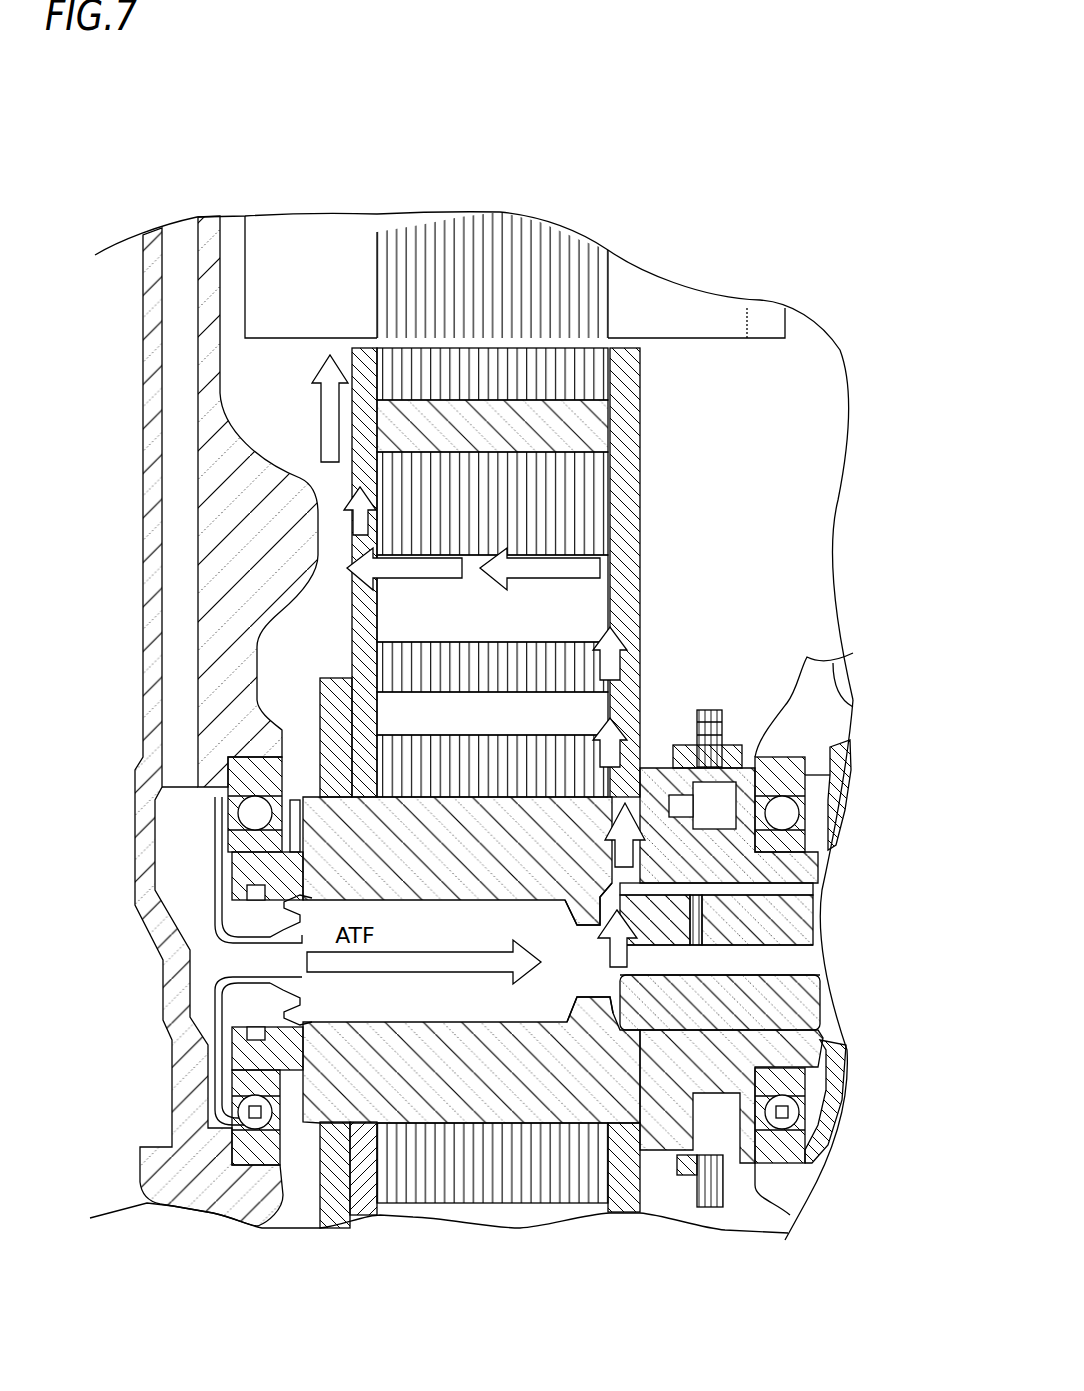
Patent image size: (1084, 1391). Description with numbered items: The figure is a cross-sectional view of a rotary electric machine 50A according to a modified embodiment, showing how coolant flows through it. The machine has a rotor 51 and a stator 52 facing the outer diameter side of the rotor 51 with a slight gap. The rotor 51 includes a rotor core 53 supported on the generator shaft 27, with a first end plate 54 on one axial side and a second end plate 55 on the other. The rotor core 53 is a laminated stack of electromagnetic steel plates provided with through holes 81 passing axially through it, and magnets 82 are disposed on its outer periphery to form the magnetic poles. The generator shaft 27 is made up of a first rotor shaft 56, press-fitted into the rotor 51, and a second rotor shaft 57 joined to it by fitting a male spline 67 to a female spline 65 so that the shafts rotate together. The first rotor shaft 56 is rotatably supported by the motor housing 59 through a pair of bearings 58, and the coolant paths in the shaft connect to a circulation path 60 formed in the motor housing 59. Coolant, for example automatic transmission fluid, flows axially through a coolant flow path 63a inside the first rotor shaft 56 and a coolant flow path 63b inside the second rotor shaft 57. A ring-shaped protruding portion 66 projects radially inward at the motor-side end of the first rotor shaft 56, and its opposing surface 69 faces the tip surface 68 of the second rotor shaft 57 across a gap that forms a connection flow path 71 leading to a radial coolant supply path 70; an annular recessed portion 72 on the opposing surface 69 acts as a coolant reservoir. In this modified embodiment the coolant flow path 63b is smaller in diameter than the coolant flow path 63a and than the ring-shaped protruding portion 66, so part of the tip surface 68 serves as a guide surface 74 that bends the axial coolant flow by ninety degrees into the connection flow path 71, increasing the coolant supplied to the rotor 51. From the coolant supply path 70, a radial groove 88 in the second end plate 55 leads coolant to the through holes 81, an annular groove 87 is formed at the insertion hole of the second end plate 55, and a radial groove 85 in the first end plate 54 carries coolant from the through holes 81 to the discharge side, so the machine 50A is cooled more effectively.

The rotary electric machine 50A is at (624, 186).
The rotor 51 is at (657, 438).
The stator 52 is at (504, 207).
The rotor core 53 is at (590, 512).
The first end plate 54 is at (352, 482).
The second end plate 55 is at (622, 475).
The first rotor shaft 56 is at (548, 1100).
The second rotor shaft 57 is at (673, 1017).
The generator shaft 27 is at (527, 1186).
The bearings 58 is at (224, 759).
The motor housing 59 is at (155, 400).
The circulation path 60 is at (180, 342).
The coolant flow path 63a is at (353, 992).
The coolant flow path 63b is at (800, 963).
The female spline 65 is at (735, 912).
The ring-shaped protruding portion 66 is at (582, 915).
The male spline 67 is at (700, 883).
The tip surface 68 is at (577, 1012).
The opposing surface 69 is at (760, 946).
The coolant supply path 70 is at (667, 808).
The connection flow path 71 is at (707, 833).
The recessed portion 72 is at (835, 1010).
The guide surface 74 is at (625, 983).
The through holes 81 is at (357, 700).
The magnets 82 is at (553, 420).
The radial groove 85 is at (378, 538).
The annular groove 87 is at (577, 797).
The radial groove 88 is at (612, 615).